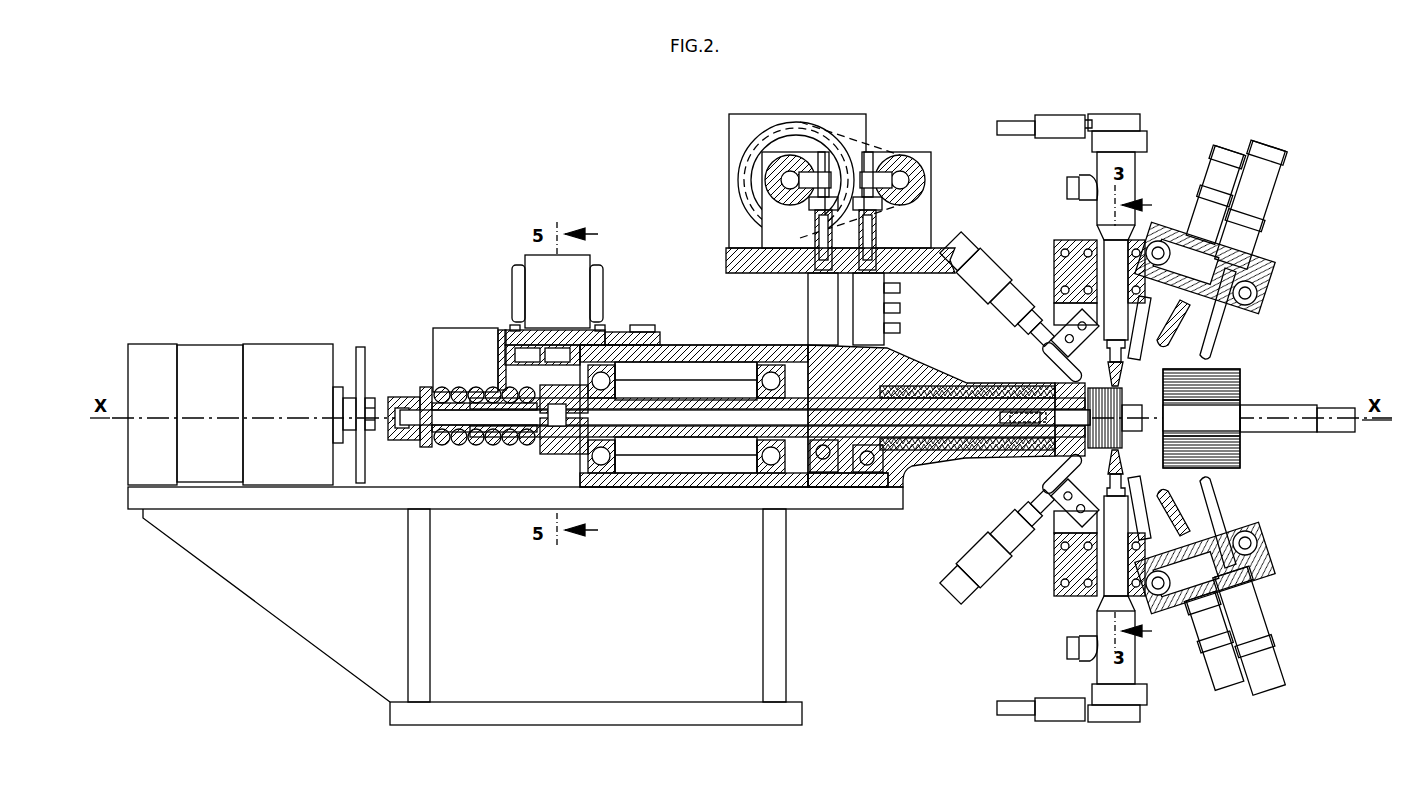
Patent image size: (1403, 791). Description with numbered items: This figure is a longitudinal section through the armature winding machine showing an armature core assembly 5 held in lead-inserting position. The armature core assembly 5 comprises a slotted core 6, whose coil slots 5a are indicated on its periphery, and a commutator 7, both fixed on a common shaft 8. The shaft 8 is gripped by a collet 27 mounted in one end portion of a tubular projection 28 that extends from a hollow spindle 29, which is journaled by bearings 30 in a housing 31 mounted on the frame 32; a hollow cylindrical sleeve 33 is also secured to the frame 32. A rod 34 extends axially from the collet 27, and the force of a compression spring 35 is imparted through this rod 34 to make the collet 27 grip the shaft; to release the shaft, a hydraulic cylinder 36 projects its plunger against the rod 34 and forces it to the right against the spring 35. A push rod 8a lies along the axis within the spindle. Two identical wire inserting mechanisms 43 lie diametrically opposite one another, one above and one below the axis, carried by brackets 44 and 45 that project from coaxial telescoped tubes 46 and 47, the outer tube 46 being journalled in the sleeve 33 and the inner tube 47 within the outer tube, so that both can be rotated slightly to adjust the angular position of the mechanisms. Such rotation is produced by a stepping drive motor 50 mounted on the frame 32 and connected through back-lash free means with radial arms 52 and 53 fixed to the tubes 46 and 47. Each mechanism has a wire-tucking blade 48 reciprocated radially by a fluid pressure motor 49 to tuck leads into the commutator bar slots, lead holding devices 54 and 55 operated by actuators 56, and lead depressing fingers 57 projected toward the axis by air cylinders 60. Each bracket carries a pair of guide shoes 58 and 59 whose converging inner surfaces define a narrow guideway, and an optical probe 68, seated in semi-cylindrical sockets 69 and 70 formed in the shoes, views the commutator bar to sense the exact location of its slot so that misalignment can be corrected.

The armature core assembly 5 is at (1248, 392).
The slots 5a is at (1230, 405).
The slotted core 6 is at (1238, 468).
The commutator 7 is at (1124, 396).
The shaft 8 is at (1302, 407).
The push rod 8a is at (1038, 453).
The collet 27 is at (1060, 392).
The tubular projection 28 is at (932, 402).
The hollow spindle 29 is at (693, 385).
The bearings 30 is at (600, 345).
The housing 31 is at (735, 345).
The frame 32 is at (693, 503).
The hollow cylindrical sleeve 33 is at (923, 470).
The rod 34 is at (676, 416).
The compression spring 35 is at (478, 440).
The hydraulic cylinder 36 is at (218, 360).
The wire inserting mechanisms 43 is at (1268, 262).
The bracket 44 is at (1065, 305).
The bracket 45 is at (1075, 548).
The outer tube 46 is at (1058, 372).
The inner tube 47 is at (1062, 466).
The wire-tucking blades 48 is at (1148, 357).
The fluid pressure motors 49 is at (1213, 186).
The drive motor 50 is at (800, 120).
The arm 52 is at (878, 312).
The arm 53 is at (822, 292).
The lead holding device 54 is at (1078, 335).
The lead holding device 55 is at (1078, 501).
The actuators 56 is at (990, 270).
The lead depressing fingers 57 is at (1172, 336).
The guide shoe 58 is at (1122, 444).
The guide shoe 59 is at (1122, 376).
The air cylinders 60 is at (1262, 202).
The optical probe 68 is at (1124, 291).
The semi-cylindrical socket 69 is at (1116, 301).
The semi-cylindrical socket 70 is at (1116, 535).